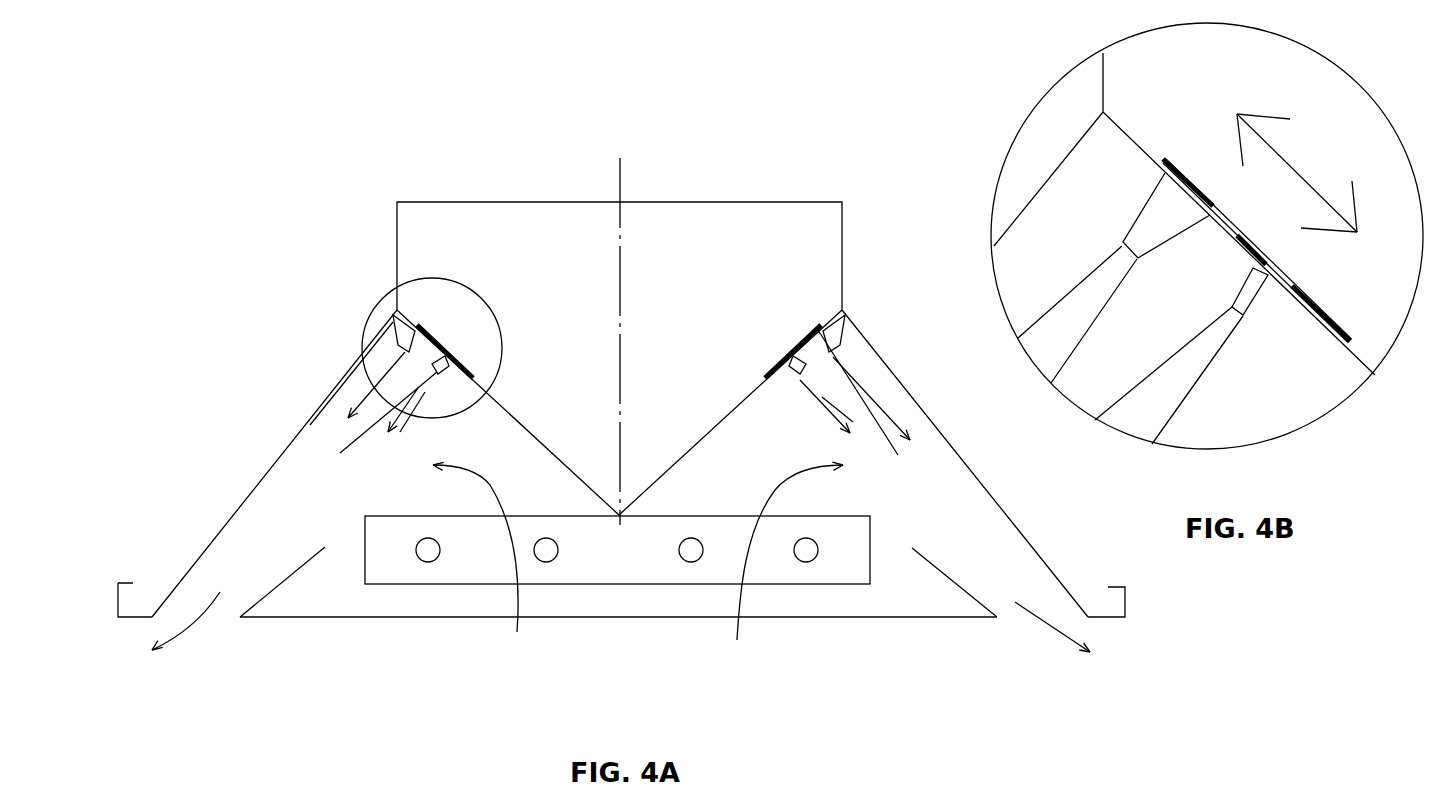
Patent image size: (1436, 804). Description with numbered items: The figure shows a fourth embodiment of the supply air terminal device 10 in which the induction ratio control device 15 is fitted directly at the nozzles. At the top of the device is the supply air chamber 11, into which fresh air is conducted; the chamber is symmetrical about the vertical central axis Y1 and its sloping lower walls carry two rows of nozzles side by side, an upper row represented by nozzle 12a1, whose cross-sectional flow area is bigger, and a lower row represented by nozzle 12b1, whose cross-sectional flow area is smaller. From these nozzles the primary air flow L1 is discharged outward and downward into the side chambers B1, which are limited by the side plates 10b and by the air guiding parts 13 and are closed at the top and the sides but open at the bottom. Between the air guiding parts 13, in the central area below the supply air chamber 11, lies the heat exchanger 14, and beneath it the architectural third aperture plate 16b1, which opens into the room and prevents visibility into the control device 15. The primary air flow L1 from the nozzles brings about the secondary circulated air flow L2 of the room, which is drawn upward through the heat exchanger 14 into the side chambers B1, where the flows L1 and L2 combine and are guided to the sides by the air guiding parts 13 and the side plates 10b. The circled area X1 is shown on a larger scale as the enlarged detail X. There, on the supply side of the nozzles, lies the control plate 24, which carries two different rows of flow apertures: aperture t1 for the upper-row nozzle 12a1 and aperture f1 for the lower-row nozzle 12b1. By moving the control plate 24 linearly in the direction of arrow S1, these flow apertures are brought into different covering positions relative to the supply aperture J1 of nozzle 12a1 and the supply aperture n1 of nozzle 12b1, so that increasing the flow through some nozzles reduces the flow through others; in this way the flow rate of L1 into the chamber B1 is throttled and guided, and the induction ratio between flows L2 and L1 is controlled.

In FIG. 4A, the supply air terminal device 10 is at (552, 178).
In FIG. 4A, the side plate 10b is at (245, 493).
In FIG. 4B, the side plate 10b is at (1184, 248).
In FIG. 4A, the supply air chamber 11 is at (686, 263).
In FIG. 4A, the nozzle 12a1 is at (404, 340).
In FIG. 4B, the nozzle 12a1 is at (1155, 203).
In FIG. 4A, the nozzle 12b1 is at (443, 365).
In FIG. 4B, the nozzle 12b1 is at (1249, 305).
In FIG. 4A, the air guiding part 13 is at (285, 582).
In FIG. 4A, the heat exchanger 14 is at (597, 575).
In FIG. 4A, the induction ratio control device 15 is at (480, 333).
In FIG. 4B, the induction ratio control device 15 is at (1199, 154).
In FIG. 4A, the third aperture plate 16b1 is at (492, 618).
In FIG. 4A, the control plate 24 is at (463, 366).
In FIG. 4B, the control plate 24 is at (1332, 319).
In FIG. 4A, the area X1 is at (367, 322).
In FIG. 4A, the vertical central axis Y1 is at (622, 178).
In FIG. 4A, the primary air flow L1 is at (352, 410).
In FIG. 4A, the circulated air flow L2 is at (492, 485).
In FIG. 4A, the side chamber B1 is at (293, 538).
In FIG. 4B, the enlarged area X is at (1057, 86).
In FIG. 4B, the arrow S1 is at (1310, 177).
In FIG. 4B, the flow aperture t1 is at (1230, 230).
In FIG. 4B, the flow aperture f1 is at (1281, 283).
In FIG. 4B, the supply aperture J1 is at (1185, 200).
In FIG. 4B, the supply aperture n1 is at (1266, 277).